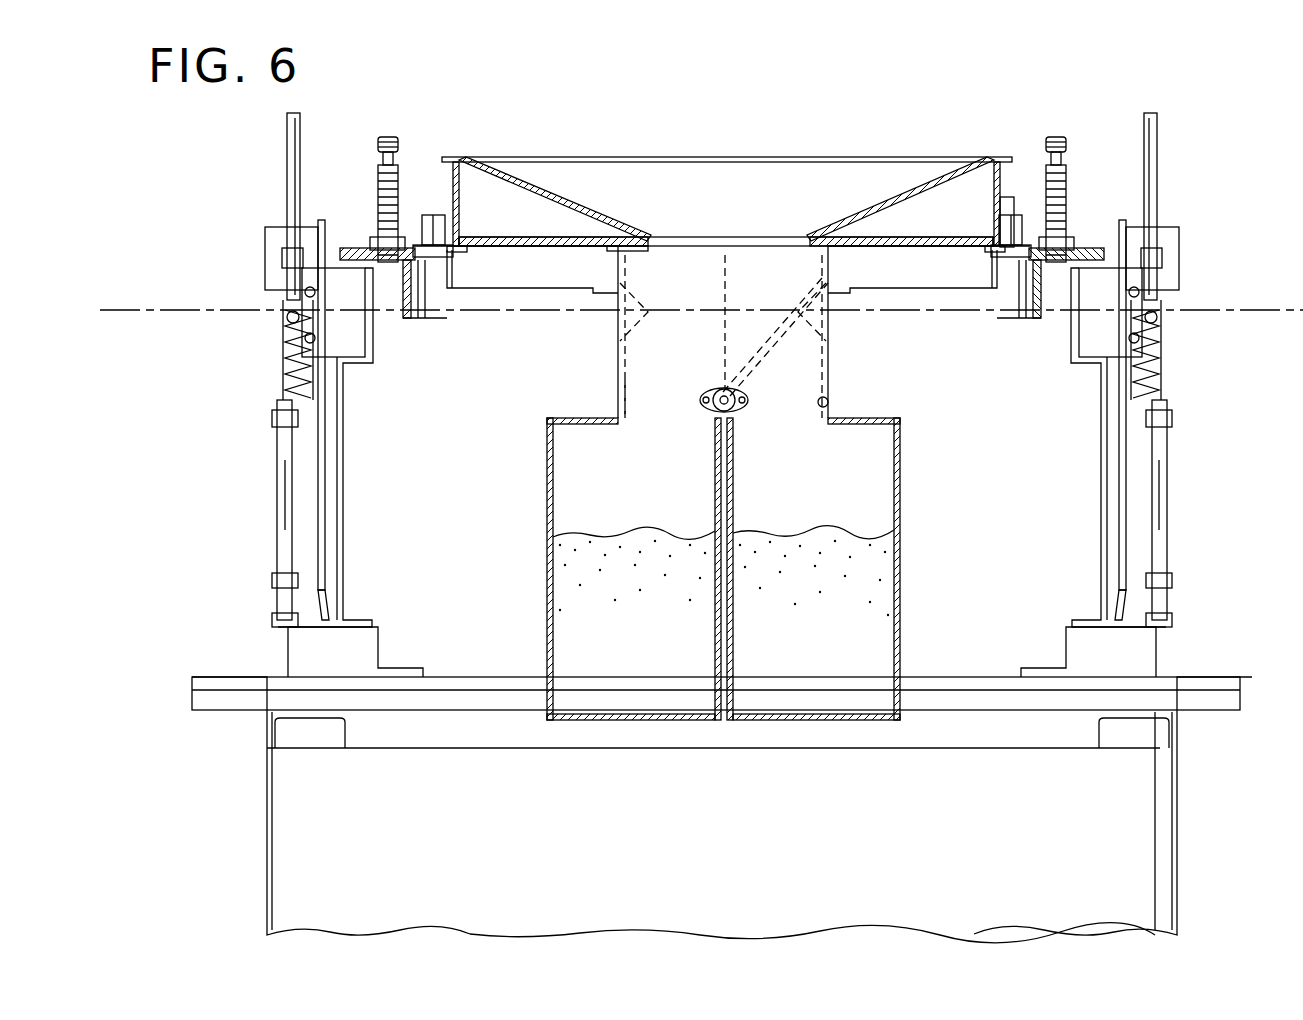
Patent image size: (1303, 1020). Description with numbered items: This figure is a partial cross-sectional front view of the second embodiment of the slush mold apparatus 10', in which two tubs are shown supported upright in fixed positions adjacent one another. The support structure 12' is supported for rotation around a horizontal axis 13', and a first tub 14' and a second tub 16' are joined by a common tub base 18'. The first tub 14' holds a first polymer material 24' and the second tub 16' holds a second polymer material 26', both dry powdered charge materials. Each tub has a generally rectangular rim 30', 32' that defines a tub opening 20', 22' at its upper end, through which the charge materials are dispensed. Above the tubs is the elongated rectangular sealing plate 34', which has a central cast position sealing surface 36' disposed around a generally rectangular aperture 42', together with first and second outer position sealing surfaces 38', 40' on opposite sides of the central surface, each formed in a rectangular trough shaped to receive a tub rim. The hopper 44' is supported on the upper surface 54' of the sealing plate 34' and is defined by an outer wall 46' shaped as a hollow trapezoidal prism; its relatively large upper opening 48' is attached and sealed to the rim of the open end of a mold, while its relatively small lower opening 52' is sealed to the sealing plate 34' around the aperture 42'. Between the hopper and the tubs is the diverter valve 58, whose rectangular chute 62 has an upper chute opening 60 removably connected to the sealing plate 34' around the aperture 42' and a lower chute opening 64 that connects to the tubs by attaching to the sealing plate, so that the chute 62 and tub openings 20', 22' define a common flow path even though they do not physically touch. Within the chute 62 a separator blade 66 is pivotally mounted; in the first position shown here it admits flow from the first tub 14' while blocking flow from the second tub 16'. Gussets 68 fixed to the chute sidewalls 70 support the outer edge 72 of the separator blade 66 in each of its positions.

The slush mold apparatus 10' is at (847, 111).
The support structure 12' is at (1132, 524).
The horizontal axis 13' is at (701, 267).
The first tub 14' is at (573, 569).
The second tub 16' is at (880, 569).
The common tub base 18' is at (710, 613).
The first tub opening 20' is at (584, 458).
The second tub opening 22' is at (858, 453).
The first polymer material 24' is at (630, 668).
The second polymer material 26' is at (813, 667).
The first tub rim 30' is at (700, 438).
The second tub rim 32' is at (753, 439).
The sealing plate 34' is at (553, 173).
The central cast position sealing surface 36' is at (891, 213).
The first outer position sealing surface 38' is at (480, 179).
The second outer position sealing surface 40' is at (979, 176).
The rectangular aperture 42' is at (655, 175).
The hopper 44' is at (555, 170).
The outer wall 46' is at (733, 173).
The upper opening 48' is at (900, 170).
The lower opening 52' is at (726, 217).
The upper surface 54' is at (515, 305).
The diverter valve 58 is at (836, 358).
The upper chute opening 60 is at (627, 257).
The chute 62 is at (626, 360).
The lower chute opening 64 is at (829, 402).
The separator blade 66 is at (772, 345).
The gussets 68 is at (627, 327).
The chute sidewalls 70 is at (623, 383).
The outer edge 72 is at (803, 317).